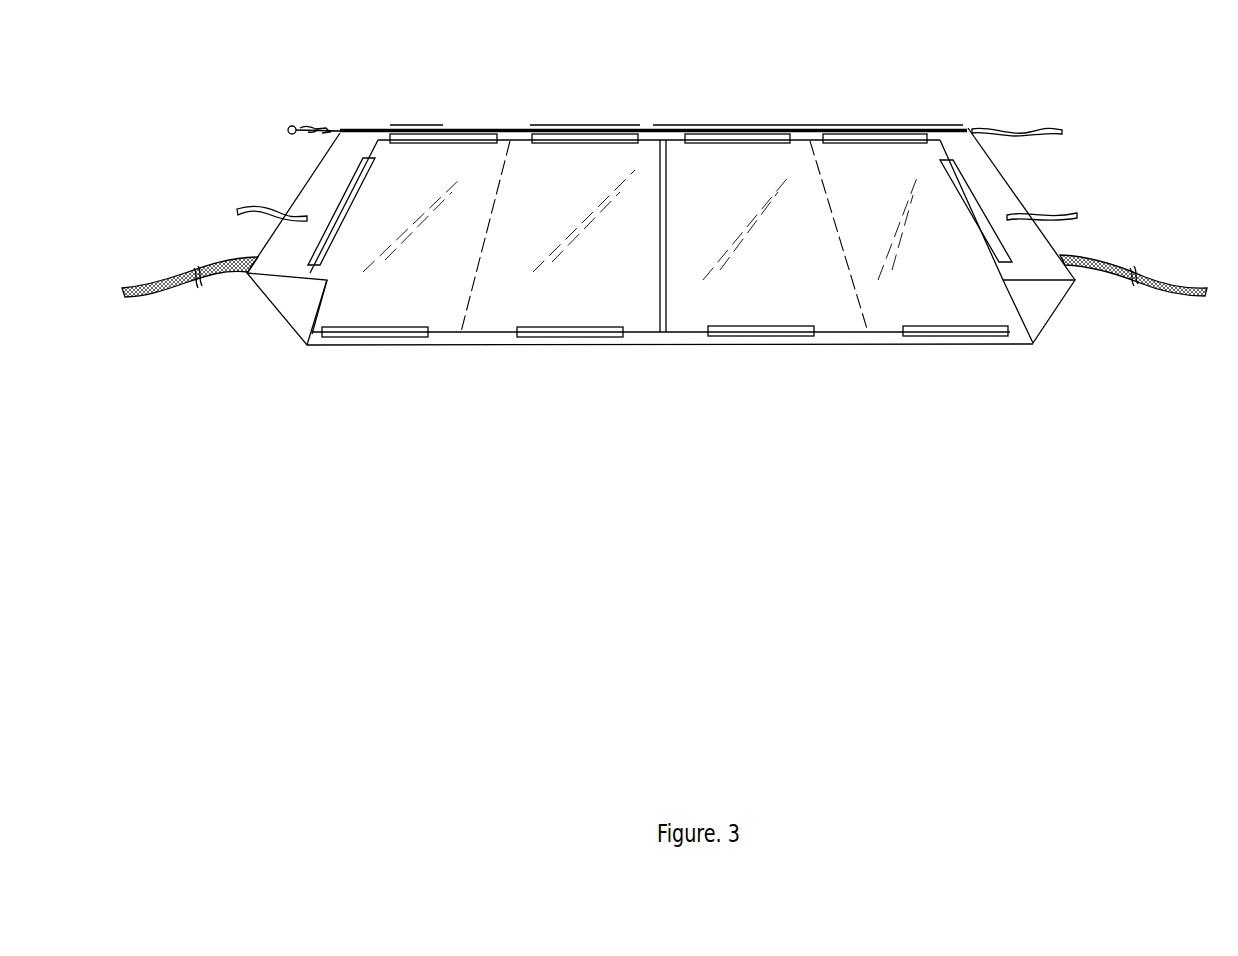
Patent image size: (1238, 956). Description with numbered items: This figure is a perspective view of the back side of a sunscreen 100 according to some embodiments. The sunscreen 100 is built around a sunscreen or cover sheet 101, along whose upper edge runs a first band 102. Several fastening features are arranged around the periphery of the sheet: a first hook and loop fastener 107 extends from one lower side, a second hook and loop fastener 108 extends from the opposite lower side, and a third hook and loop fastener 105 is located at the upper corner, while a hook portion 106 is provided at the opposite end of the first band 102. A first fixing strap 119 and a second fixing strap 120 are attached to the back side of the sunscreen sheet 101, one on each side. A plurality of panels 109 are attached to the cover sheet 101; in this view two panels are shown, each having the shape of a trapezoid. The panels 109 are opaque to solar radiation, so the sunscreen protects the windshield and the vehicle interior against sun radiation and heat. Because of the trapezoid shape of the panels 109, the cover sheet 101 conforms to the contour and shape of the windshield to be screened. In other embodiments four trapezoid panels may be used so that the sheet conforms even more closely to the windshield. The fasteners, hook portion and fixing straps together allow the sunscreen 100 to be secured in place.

The sunscreen 100 is at (742, 345).
The sunscreen sheet 101 is at (1048, 300).
The first band 102 is at (652, 128).
The third hook and loop fastener 105 is at (1045, 131).
The hook portion 106 is at (306, 126).
The first hook and loop fastener 107 is at (218, 276).
The second hook and loop fastener 108 is at (503, 307).
The panel 109 is at (845, 318).
The first fixing strap 119 is at (1058, 212).
The second fixing strap 120 is at (257, 207).